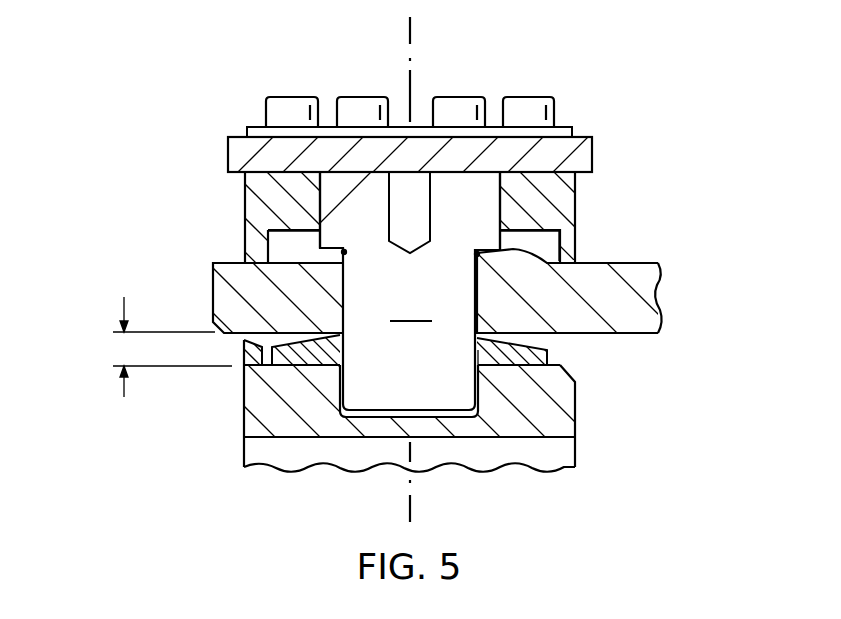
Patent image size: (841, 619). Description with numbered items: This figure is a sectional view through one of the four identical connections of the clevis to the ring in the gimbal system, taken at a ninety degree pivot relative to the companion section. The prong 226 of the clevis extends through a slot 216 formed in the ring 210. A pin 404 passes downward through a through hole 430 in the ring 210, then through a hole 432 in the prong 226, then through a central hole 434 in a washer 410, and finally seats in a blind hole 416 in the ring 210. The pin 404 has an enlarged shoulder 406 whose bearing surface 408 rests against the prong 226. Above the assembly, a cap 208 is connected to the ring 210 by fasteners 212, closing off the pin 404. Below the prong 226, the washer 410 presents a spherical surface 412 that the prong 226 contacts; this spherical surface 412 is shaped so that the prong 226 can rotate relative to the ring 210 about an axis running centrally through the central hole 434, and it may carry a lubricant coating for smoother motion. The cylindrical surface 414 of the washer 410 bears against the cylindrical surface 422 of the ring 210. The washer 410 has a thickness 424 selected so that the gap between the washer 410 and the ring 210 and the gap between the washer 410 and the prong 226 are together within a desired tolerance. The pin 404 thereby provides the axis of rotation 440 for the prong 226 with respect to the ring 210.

The axis of rotation 440 is at (413, 31).
The cap 208 is at (585, 153).
The fasteners 212 is at (265, 111).
The ring 210 is at (251, 188).
The shoulder 406 is at (333, 188).
The bearing surface 408 is at (311, 262).
The through hole 430 is at (503, 212).
The slot 216 is at (552, 251).
The pin 404 is at (410, 291).
The hole 432 is at (343, 254).
The prong 226 is at (659, 293).
The thickness 424 is at (122, 386).
The cylindrical surface 414 is at (266, 357).
The cylindrical surface 422 is at (300, 366).
The spherical surface 412 is at (531, 341).
The washer 410 is at (540, 359).
The blind hole 416 is at (396, 423).
The central hole 434 is at (491, 346).